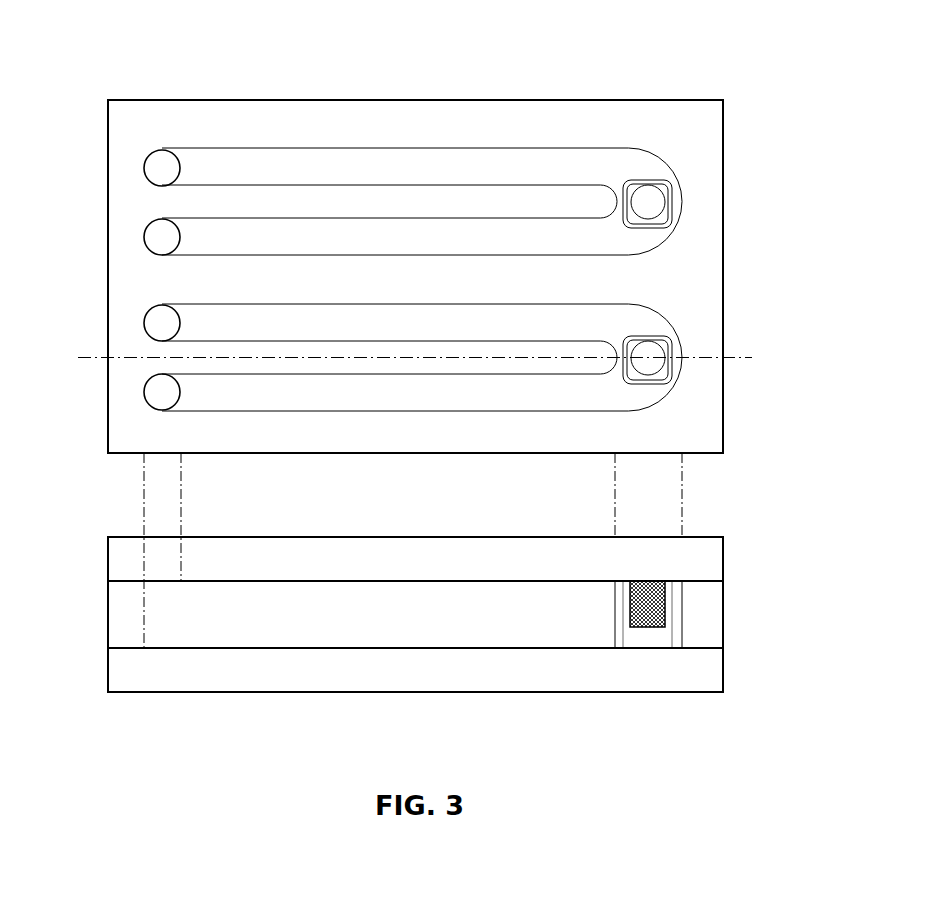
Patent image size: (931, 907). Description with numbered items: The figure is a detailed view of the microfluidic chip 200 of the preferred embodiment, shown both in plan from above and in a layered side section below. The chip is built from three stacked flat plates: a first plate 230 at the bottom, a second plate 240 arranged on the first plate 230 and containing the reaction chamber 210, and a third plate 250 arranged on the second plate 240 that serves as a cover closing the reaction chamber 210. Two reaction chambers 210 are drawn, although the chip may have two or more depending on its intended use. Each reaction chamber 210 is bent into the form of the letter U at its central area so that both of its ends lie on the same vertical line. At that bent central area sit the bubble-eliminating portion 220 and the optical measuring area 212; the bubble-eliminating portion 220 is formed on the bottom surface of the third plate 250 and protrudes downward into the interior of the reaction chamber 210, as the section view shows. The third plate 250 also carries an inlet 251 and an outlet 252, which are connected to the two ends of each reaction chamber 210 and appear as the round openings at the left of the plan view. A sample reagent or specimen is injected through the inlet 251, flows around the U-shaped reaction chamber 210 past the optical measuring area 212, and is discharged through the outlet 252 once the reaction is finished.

The microfluidic chip 200 is at (158, 53).
The reaction chamber 210 is at (320, 165).
The optical measuring area 212 is at (670, 216).
The bubble-eliminating portion 220 is at (655, 202).
The first plate 230 is at (725, 672).
The second plate 240 is at (725, 618).
The third plate 250 is at (725, 560).
The inlet 251 is at (170, 152).
The outlet 252 is at (158, 237).